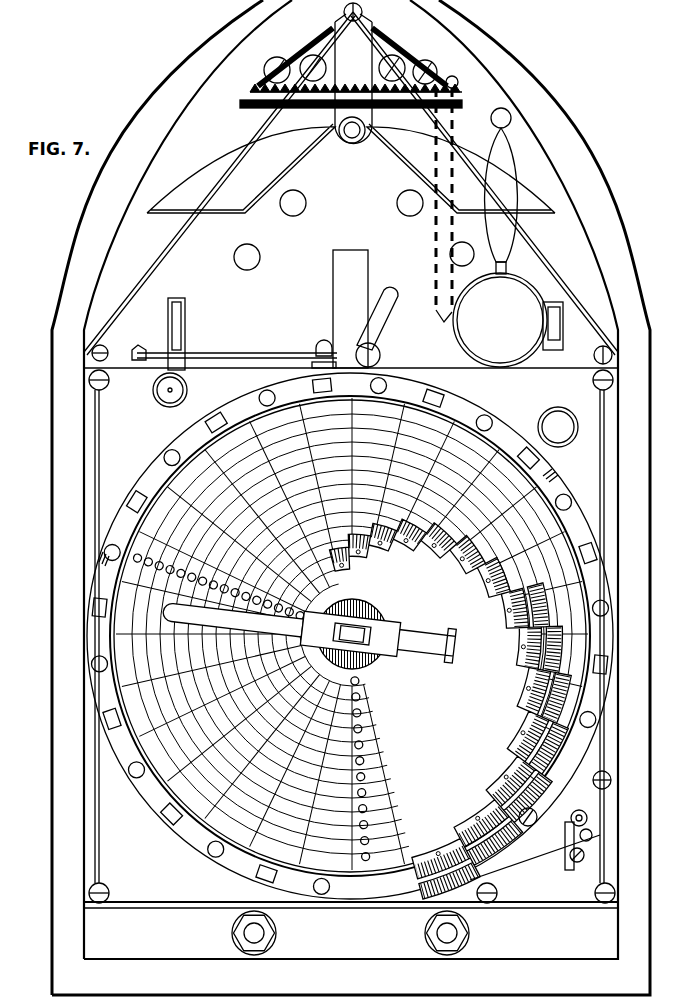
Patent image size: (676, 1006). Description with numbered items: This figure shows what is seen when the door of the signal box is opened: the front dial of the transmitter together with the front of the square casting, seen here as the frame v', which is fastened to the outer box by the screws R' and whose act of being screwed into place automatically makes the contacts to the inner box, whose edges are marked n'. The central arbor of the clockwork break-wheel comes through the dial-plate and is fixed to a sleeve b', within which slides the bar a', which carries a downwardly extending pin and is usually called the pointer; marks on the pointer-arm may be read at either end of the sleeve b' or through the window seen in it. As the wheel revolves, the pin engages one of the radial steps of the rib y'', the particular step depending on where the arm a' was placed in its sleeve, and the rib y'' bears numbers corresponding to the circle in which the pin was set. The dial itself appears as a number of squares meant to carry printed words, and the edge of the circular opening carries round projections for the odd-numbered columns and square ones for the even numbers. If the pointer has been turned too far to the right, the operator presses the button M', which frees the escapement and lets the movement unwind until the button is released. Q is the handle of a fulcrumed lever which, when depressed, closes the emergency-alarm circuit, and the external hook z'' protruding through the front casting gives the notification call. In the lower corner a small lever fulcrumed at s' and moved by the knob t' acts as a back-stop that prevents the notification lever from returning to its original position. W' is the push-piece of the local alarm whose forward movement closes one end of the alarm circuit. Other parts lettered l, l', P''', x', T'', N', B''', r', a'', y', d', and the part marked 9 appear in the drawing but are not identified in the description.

The screws R' is at (352, 453).
The push-piece W' is at (353, 79).
The pendulum rod l is at (501, 191).
The pendulum bob l' is at (500, 320).
The bracket P''' is at (566, 326).
The guide post 9 is at (180, 325).
The horizontal rod x' is at (234, 361).
The post T'' is at (324, 350).
The hole N' is at (182, 390).
The lever handle Q is at (197, 387).
The button M' is at (558, 427).
The numbered ring B''' is at (350, 636).
The ratchet teeth r' is at (328, 670).
The row of holes a'' is at (260, 699).
The rib y'' is at (451, 709).
The stop piece y' is at (446, 740).
The pointer bar a' is at (232, 619).
The pointer extension d' is at (426, 643).
The sleeve b' is at (350, 633).
The frame v' is at (535, 859).
The external hook z'' is at (559, 846).
The lever fulcrum s' is at (583, 815).
The knob t' is at (590, 835).
The inner box n' is at (581, 855).